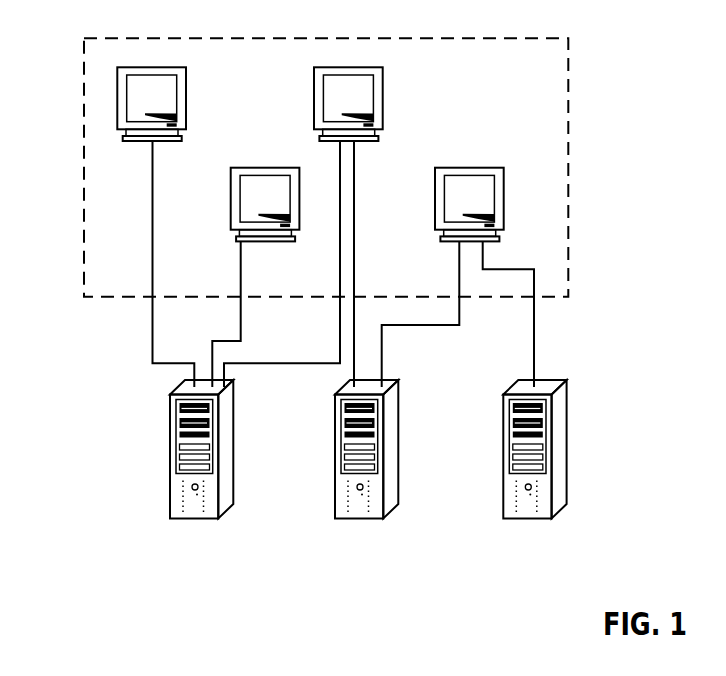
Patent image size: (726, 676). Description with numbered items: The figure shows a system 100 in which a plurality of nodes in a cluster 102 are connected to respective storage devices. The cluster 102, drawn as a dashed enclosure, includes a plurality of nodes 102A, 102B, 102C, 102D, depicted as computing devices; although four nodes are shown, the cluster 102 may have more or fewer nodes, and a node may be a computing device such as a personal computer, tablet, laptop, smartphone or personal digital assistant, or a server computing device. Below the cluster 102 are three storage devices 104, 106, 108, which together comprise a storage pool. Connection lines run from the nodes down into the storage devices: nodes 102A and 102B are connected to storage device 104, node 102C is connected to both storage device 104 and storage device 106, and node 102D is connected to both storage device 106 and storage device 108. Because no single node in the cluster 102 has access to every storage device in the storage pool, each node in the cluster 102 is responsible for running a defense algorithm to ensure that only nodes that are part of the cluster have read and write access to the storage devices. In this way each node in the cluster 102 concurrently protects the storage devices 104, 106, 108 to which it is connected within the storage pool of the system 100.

The system 100 is at (84, 618).
The cluster 102 is at (568, 38).
The node 102A is at (187, 92).
The node 102B is at (283, 168).
The node 102C is at (380, 92).
The node 102D is at (490, 168).
The storage device 104 is at (170, 446).
The storage device 106 is at (335, 446).
The storage device 108 is at (503, 446).